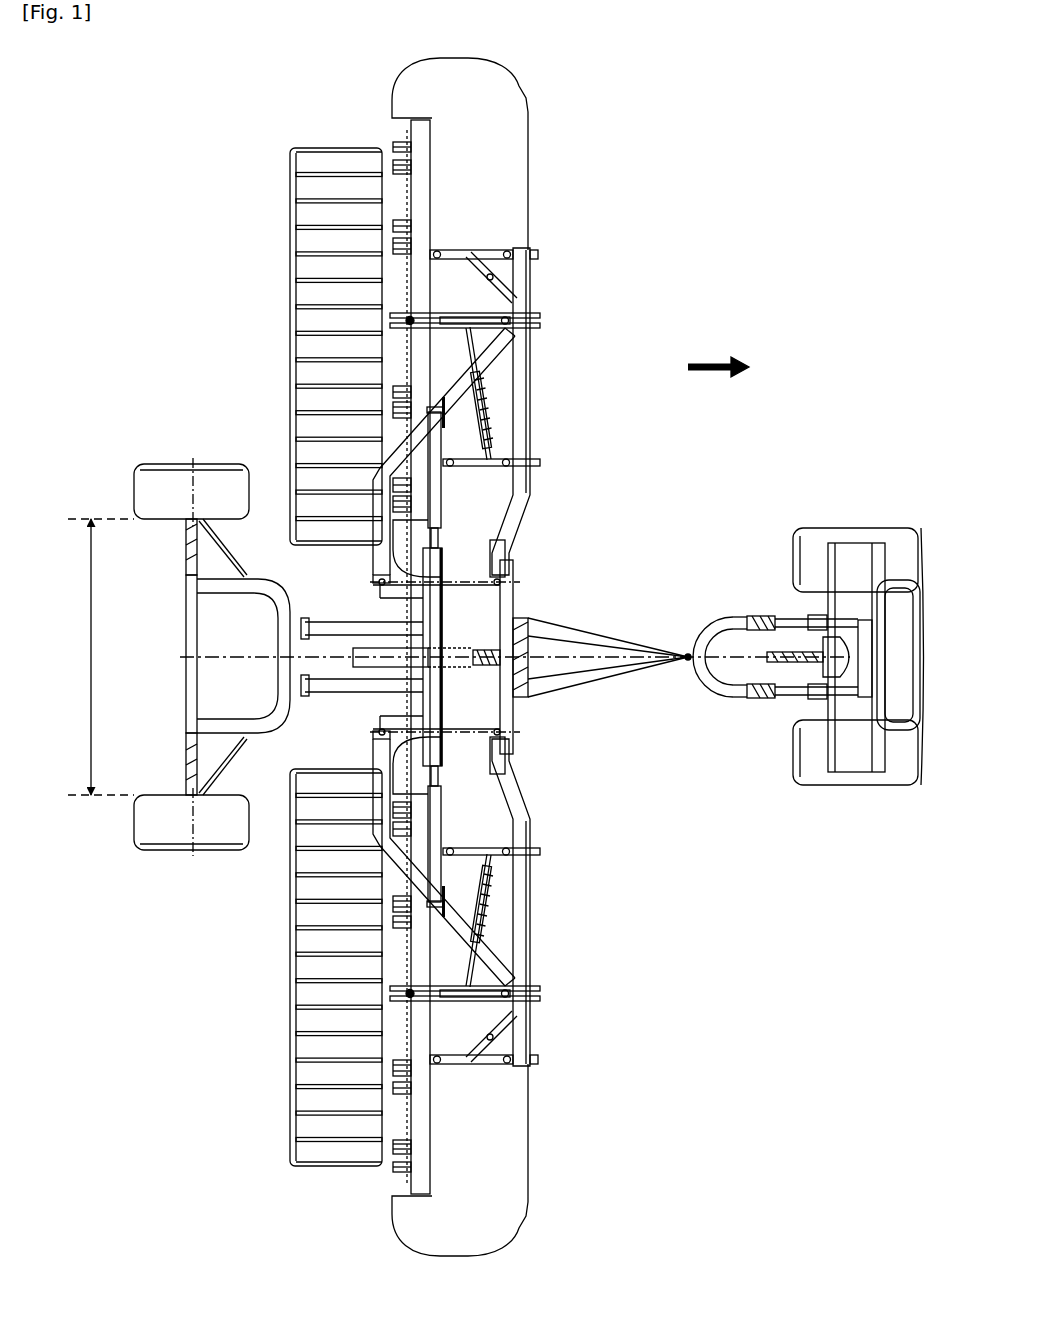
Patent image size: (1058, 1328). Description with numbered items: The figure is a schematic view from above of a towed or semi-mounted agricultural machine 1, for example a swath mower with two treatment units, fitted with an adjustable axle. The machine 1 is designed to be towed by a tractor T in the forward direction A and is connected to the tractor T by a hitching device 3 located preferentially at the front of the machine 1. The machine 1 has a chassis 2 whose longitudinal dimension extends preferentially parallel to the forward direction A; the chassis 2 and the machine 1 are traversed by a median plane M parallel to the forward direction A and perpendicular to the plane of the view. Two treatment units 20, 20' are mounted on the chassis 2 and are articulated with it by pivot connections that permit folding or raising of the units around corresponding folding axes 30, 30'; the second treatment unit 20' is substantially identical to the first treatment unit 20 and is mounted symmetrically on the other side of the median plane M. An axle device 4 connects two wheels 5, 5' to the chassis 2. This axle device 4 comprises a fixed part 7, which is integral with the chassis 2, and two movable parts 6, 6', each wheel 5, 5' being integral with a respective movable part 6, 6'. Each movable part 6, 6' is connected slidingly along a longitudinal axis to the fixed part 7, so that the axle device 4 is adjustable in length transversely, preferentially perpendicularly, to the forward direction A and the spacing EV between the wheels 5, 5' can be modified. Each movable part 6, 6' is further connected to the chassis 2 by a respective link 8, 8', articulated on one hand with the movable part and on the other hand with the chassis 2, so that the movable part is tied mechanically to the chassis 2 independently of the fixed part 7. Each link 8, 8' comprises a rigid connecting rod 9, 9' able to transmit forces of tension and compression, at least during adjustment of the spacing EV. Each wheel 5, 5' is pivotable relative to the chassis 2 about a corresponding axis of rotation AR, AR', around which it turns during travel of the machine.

The agricultural machine 1 is at (695, 131).
The chassis 2 is at (276, 598).
The hitching device 3 is at (771, 669).
The axle device 4 is at (199, 618).
The wheel 5 is at (191, 859).
The wheel 5' is at (191, 473).
The movable part 6 is at (172, 764).
The movable part 6' is at (168, 547).
The fixed part 7 is at (184, 684).
The link 8 is at (259, 765).
The rigid connecting rod 9 is at (259, 765).
The link 8' is at (163, 520).
The rigid connecting rod 9' is at (163, 520).
The treatment unit 20 is at (527, 955).
The treatment unit 20' is at (480, 358).
The folding axis 30 is at (466, 764).
The folding axis 30' is at (471, 559).
The forward direction A is at (718, 353).
The tractor T is at (808, 472).
The median plane M is at (742, 660).
The spacing between the wheels EV is at (91, 690).
The axis of rotation AR is at (221, 848).
The axis of rotation AR' is at (227, 476).